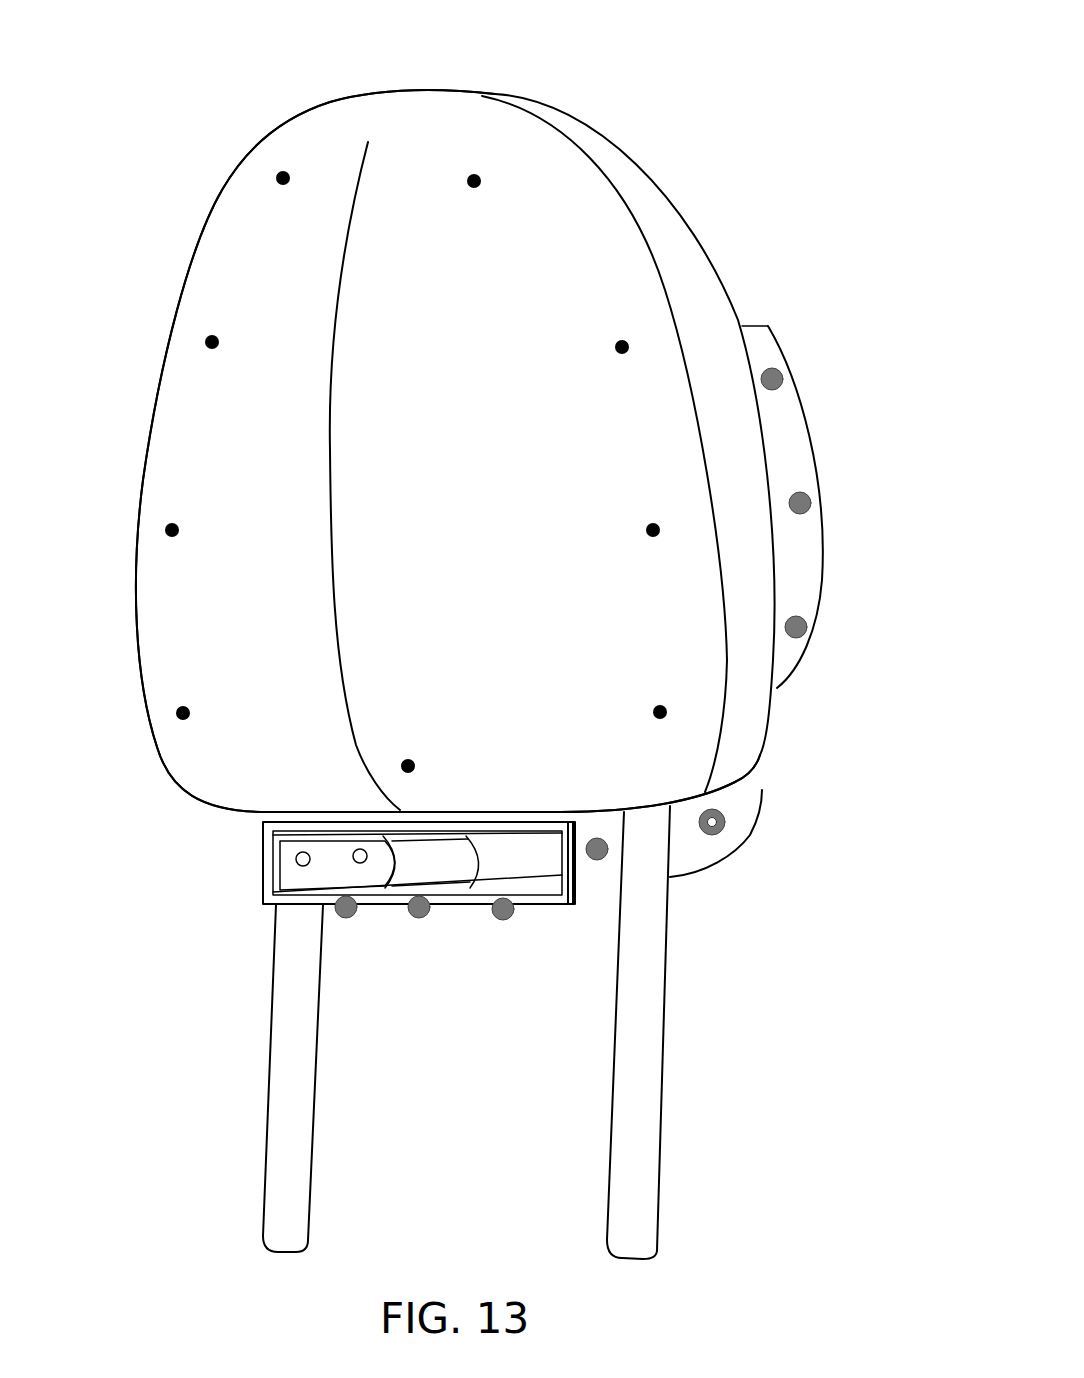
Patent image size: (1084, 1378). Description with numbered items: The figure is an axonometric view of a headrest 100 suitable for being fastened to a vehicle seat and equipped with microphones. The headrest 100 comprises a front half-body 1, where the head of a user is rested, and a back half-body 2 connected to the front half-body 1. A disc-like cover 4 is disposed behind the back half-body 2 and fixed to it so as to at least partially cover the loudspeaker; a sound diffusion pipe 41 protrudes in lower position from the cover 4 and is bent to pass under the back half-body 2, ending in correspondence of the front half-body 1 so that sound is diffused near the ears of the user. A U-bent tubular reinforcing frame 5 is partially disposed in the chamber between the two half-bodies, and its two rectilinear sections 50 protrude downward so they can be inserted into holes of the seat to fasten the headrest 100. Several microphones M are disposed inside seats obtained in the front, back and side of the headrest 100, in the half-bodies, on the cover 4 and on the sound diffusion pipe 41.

The headrest 100 is at (683, 130).
The front half-body 1 is at (193, 750).
The back half-body 2 is at (703, 238).
The cover 4 is at (772, 323).
The sound diffusion pipe 41 is at (712, 874).
The reinforcing frame 5 is at (665, 1094).
The rectilinear sections 50 is at (297, 1192).
The microphone M is at (292, 172).